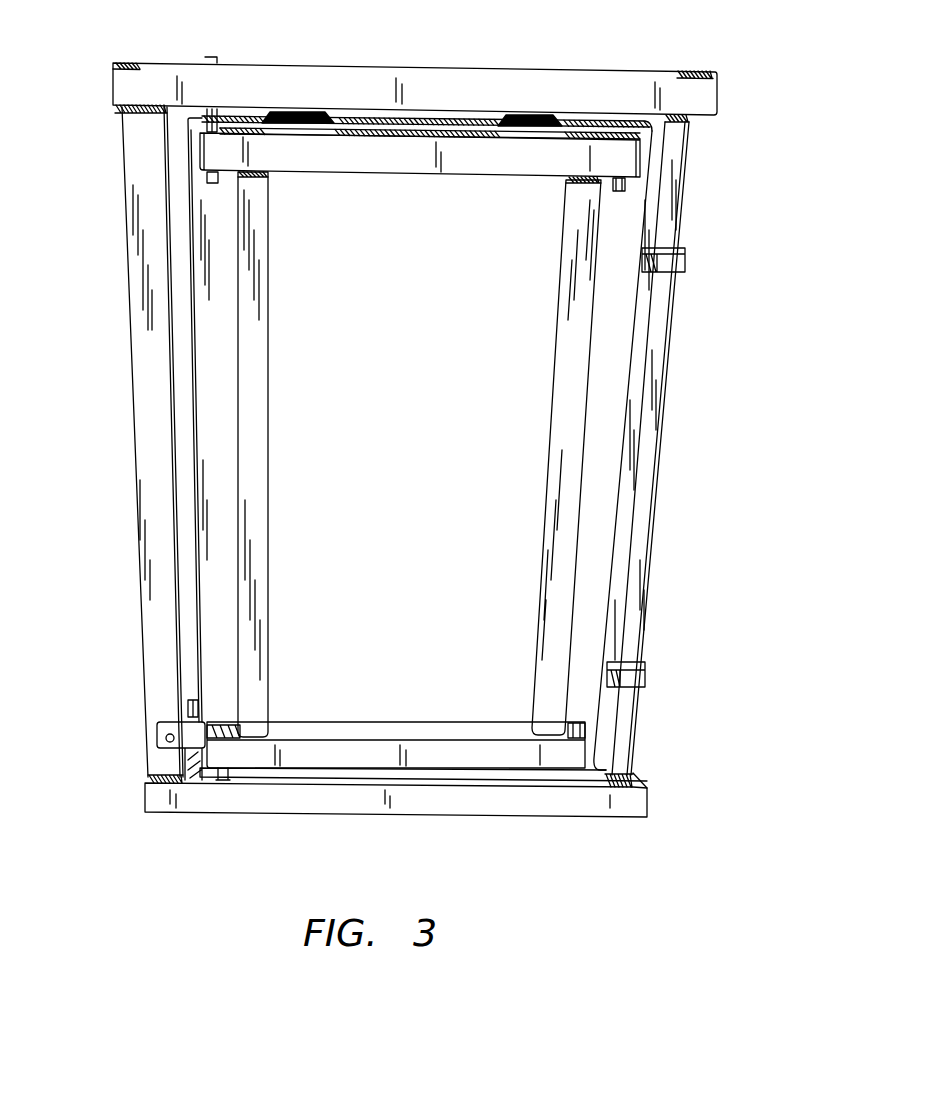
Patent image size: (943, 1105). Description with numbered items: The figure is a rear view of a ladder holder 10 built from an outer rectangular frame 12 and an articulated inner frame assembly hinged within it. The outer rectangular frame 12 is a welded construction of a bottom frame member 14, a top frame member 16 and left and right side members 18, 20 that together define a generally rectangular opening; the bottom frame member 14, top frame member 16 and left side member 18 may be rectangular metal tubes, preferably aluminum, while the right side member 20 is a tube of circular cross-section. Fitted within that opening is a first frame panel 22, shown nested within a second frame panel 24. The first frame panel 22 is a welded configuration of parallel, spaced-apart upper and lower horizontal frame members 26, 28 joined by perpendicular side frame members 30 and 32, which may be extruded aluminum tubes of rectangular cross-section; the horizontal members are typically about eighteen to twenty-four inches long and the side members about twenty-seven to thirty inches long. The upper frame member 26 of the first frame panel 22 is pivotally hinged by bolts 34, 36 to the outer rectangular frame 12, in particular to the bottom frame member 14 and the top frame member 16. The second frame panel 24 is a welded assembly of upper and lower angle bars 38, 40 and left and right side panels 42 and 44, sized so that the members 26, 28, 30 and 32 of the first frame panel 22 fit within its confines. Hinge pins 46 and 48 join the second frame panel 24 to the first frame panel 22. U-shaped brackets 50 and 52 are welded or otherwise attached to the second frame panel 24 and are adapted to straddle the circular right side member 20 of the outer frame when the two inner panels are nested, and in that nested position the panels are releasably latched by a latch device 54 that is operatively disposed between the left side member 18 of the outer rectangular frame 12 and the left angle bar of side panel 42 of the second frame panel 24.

The ladder holder 10 is at (710, 433).
The outer rectangular frame 12 is at (137, 352).
The bottom frame member 14 is at (485, 812).
The top frame member 16 is at (325, 102).
The left side member 18 is at (156, 339).
The right side member 20 is at (660, 510).
The first frame panel 22 is at (388, 170).
The second frame panel 24 is at (200, 272).
The upper horizontal frame member 26 is at (342, 165).
The lower horizontal frame member 28 is at (473, 763).
The side frame member 30 is at (250, 324).
The side frame member 32 is at (575, 325).
The bolt 34 is at (208, 180).
The bolt 36 is at (218, 725).
The upper angle bar 38 is at (467, 133).
The lower angle bar 40 is at (532, 777).
The left side panel 42 is at (208, 478).
The right side panel 44 is at (611, 567).
The hinge pin 46 is at (623, 190).
The hinge pin 48 is at (585, 733).
The U-shaped bracket 50 is at (686, 260).
The U-shaped bracket 52 is at (646, 677).
The latch device 54 is at (157, 738).